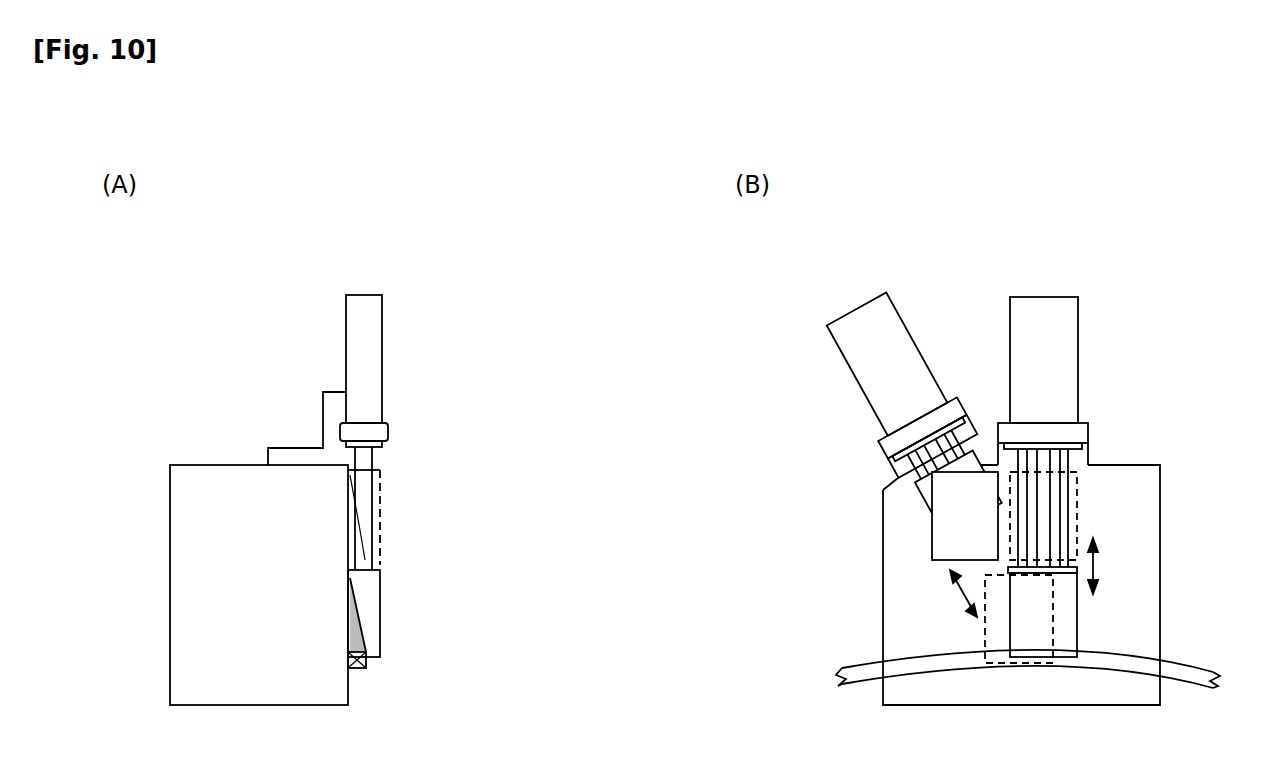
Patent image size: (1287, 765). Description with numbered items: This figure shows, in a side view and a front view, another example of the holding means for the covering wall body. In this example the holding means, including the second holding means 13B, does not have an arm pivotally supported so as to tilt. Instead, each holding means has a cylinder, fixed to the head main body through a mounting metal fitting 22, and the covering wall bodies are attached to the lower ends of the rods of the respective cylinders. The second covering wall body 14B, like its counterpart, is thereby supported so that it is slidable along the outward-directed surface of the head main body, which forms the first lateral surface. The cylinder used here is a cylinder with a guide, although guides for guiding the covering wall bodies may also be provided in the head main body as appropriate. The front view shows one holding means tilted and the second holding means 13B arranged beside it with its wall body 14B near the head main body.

The mounting metal fitting 22 is at (300, 448).
The second holding means 13B is at (874, 394).
The second covering wall body 14B is at (930, 540).